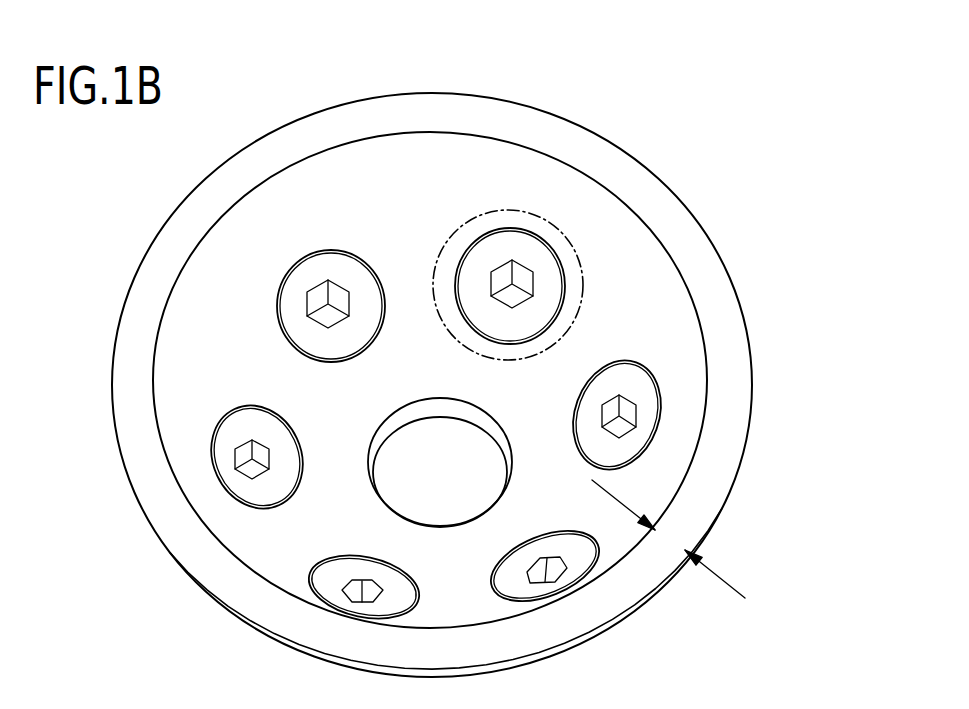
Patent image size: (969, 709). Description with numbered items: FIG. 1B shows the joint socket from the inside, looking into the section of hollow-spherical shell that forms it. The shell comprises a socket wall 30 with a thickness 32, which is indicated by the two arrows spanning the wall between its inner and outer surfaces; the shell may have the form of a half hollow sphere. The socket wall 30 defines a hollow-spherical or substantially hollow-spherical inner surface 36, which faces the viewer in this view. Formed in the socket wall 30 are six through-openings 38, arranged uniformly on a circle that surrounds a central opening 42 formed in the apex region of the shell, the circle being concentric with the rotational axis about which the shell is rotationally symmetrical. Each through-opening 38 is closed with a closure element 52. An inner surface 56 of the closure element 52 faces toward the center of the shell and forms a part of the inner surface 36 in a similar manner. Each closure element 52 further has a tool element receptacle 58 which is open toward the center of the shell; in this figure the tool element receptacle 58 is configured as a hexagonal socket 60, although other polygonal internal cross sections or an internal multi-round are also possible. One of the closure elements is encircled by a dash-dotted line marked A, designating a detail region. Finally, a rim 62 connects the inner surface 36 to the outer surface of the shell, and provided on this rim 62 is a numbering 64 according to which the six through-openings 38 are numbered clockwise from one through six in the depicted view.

The socket wall 30 is at (653, 198).
The thickness 32 is at (668, 540).
The inner surface 36 is at (438, 233).
The through-openings 38 is at (658, 412).
The central opening 42 is at (428, 412).
The closure element 52 is at (541, 249).
The inner surface of the closure element 56 is at (289, 265).
The tool element receptacle 58 is at (253, 455).
The hexagonal socket 60 is at (323, 298).
The rim 62 is at (703, 260).
The numbering 64 is at (568, 143).
The detail region A is at (506, 214).